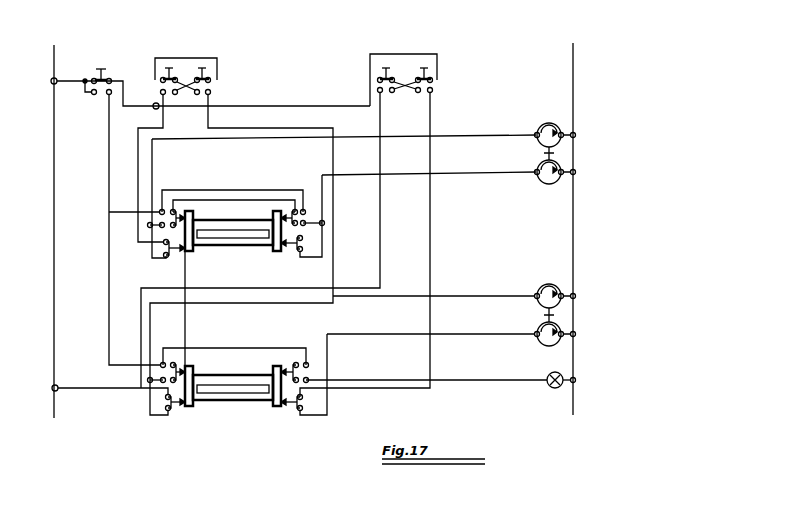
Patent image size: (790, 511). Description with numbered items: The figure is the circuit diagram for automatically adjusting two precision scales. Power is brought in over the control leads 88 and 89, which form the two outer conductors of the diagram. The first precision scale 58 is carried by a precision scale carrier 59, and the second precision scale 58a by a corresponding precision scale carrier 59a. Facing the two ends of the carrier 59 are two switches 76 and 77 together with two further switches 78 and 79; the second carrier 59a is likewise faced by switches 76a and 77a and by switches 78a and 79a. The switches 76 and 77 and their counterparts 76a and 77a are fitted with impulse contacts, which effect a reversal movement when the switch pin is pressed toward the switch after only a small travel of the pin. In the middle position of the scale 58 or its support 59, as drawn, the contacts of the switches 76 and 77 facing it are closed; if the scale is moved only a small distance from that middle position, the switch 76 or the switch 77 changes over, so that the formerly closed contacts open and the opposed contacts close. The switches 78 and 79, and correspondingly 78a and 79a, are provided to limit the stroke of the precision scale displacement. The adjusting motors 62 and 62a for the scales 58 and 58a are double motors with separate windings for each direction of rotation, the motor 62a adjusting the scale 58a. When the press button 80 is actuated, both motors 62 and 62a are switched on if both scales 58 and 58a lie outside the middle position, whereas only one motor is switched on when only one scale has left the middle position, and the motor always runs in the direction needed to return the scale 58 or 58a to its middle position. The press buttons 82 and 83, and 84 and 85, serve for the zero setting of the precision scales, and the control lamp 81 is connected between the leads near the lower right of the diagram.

The control lead 88 is at (56, 68).
The press button 80 is at (103, 69).
The press button 82 is at (170, 68).
The press button 83 is at (205, 68).
The press button 84 is at (387, 68).
The press button 85 is at (425, 68).
The control lead 89 is at (573, 72).
The adjusting motor 62 is at (546, 153).
The adjusting motor 62a is at (546, 315).
The control lamp 81 is at (556, 389).
The precision scale carrier 59 is at (222, 229).
The precision scale 58 is at (253, 238).
The switch 76 is at (176, 213).
The switch 77 is at (295, 210).
The switch 78 is at (168, 257).
The switch 79 is at (299, 251).
The precision scale carrier 59a is at (222, 383).
The precision scale 58a is at (253, 395).
The switch 76a is at (178, 367).
The switch 77a is at (297, 363).
The switch 78a is at (170, 412).
The switch 79a is at (299, 411).